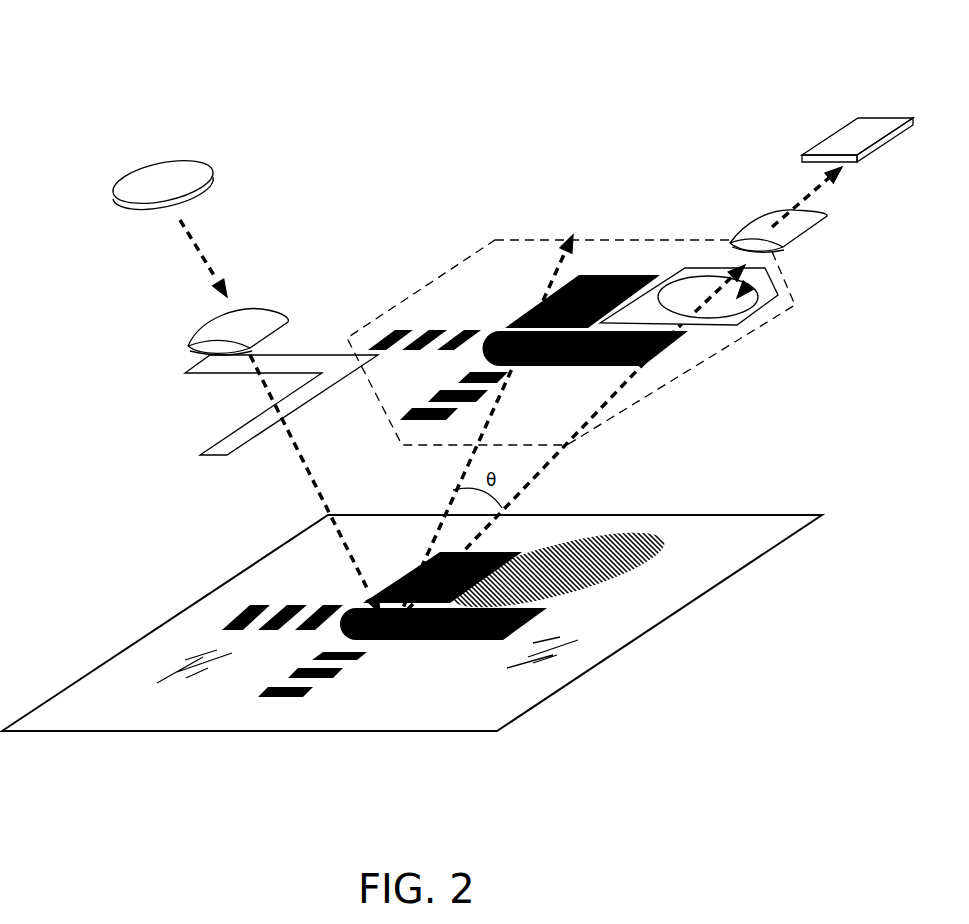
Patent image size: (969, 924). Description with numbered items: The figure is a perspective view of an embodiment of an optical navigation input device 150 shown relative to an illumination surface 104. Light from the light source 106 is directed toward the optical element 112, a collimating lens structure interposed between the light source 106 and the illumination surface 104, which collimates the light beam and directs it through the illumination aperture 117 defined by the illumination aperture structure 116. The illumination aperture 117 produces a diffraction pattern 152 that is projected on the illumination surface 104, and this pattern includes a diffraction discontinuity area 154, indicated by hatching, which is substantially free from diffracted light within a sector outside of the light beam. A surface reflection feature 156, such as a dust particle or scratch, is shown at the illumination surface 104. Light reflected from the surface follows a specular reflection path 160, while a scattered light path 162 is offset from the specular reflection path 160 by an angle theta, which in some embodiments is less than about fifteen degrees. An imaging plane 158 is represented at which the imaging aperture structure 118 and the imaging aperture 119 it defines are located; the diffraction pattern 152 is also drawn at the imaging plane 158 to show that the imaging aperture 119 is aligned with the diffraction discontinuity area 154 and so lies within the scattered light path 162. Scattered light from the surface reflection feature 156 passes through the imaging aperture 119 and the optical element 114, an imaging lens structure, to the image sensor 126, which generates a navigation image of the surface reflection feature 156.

The optical navigation input device 150 is at (207, 50).
The light source 106 is at (132, 182).
The optical element 112 is at (203, 334).
The illumination aperture structure 116 is at (220, 446).
The illumination aperture 117 is at (278, 385).
The imaging plane 158 is at (440, 278).
The diffraction pattern 152 is at (492, 305).
The specular reflection path 160 is at (465, 463).
The scattered light path 162 is at (557, 452).
The imaging aperture structure 118 is at (758, 302).
The imaging aperture 119 is at (748, 275).
The optical element 114 is at (755, 233).
The image sensor 126 is at (832, 143).
The illumination surface 104 is at (143, 647).
The diffraction discontinuity area 154 is at (636, 547).
The surface reflection feature 156 is at (388, 630).